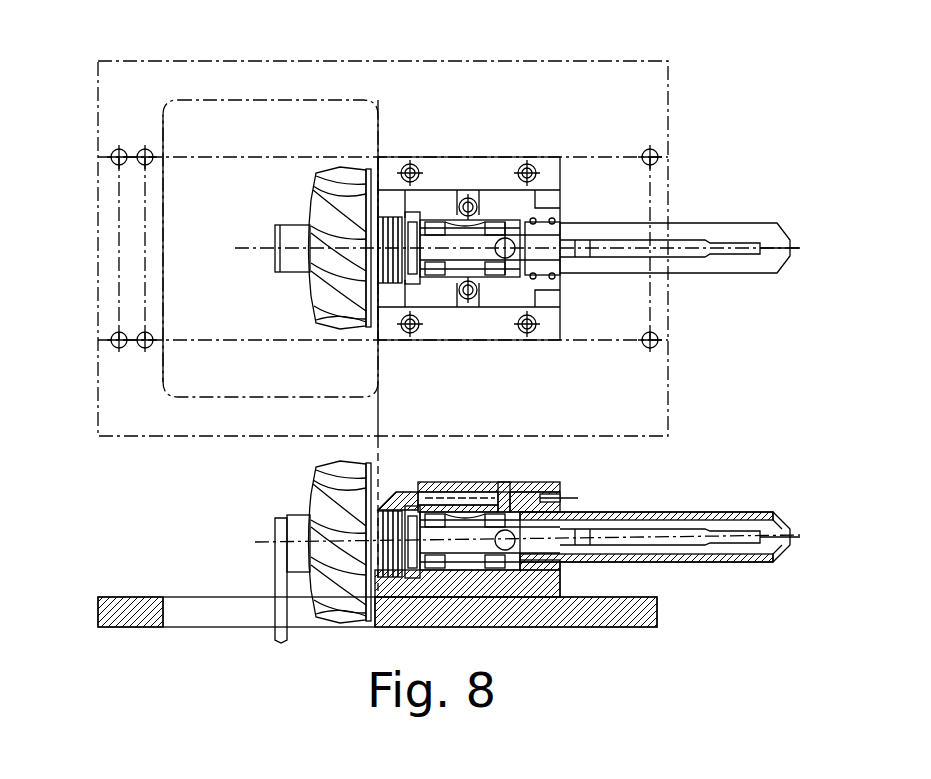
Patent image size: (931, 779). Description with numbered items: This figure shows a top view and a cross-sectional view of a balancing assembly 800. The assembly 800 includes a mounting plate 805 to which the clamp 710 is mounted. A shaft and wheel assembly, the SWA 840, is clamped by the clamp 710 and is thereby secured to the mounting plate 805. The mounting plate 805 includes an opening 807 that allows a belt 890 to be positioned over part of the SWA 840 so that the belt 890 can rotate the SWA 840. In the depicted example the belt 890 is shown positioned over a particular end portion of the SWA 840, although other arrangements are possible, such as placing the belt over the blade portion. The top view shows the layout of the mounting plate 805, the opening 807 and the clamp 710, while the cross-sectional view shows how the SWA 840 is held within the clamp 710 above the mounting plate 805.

The assembly 800 is at (195, 34).
The mounting plate 805 is at (551, 62).
The opening 807 is at (380, 129).
The clamp 710 is at (447, 190).
The SWA 840 is at (293, 222).
The belt 890 is at (276, 590).